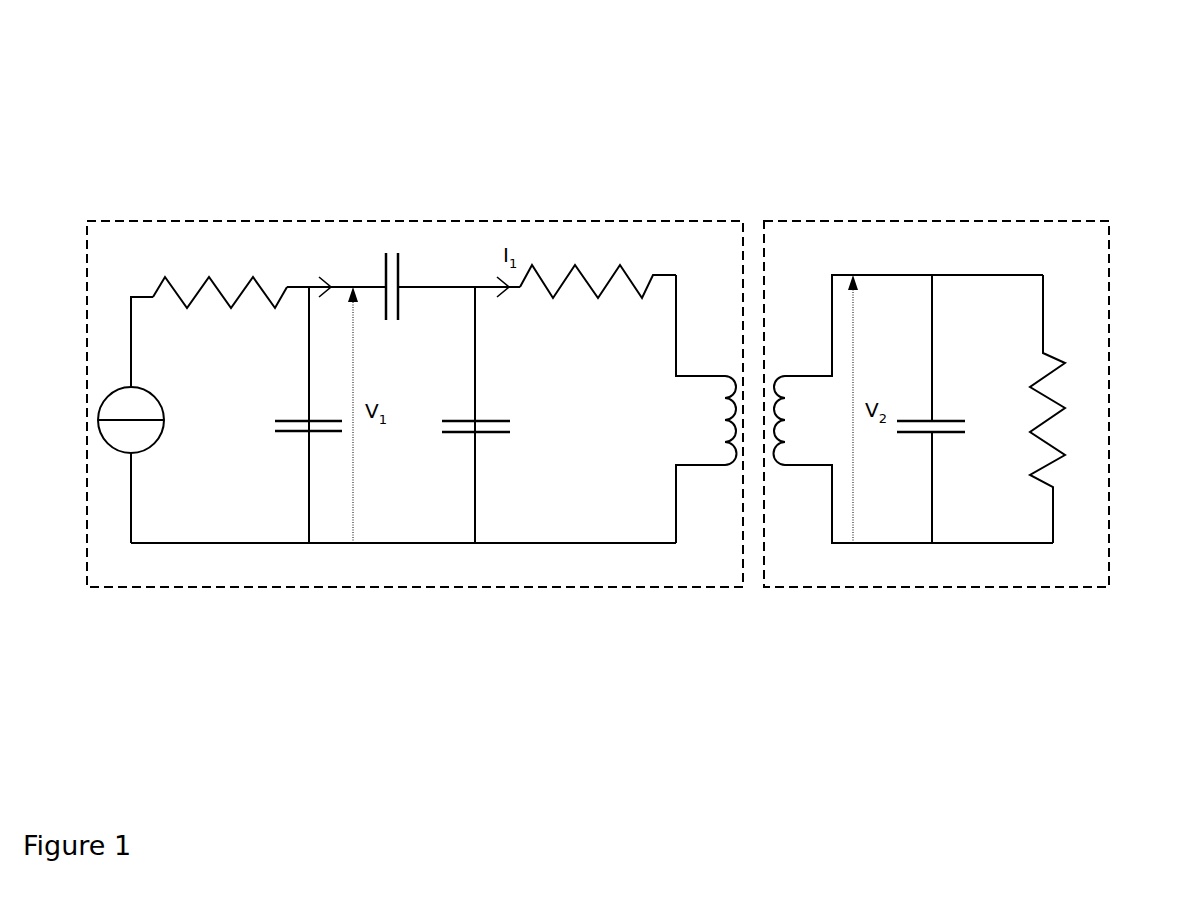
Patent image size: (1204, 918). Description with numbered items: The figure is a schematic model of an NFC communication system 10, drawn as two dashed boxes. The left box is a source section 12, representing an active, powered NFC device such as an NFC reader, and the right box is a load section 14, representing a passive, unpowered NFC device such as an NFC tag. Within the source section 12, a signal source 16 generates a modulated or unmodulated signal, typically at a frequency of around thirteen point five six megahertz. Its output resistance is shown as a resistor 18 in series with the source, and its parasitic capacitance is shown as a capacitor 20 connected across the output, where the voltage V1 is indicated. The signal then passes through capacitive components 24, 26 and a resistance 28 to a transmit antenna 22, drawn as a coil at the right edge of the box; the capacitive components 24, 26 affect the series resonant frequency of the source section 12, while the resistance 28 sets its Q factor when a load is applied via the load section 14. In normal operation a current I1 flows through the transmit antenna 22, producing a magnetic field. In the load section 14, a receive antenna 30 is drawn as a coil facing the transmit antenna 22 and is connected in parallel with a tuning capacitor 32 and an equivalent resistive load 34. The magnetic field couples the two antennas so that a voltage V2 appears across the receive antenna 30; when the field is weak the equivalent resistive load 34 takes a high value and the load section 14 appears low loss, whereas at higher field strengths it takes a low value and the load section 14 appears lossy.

The NFC system model 10 is at (193, 112).
The source section 12 is at (108, 587).
The load section 14 is at (822, 587).
The signal source 16 is at (132, 442).
The resistor 18 is at (219, 308).
The capacitor 20 is at (275, 433).
The transmit antenna 22 is at (708, 467).
The capacitive component 24 is at (386, 320).
The capacitive component 26 is at (442, 433).
The resistance 28 is at (587, 298).
The receive antenna 30 is at (797, 467).
The tuning capacitor 32 is at (897, 433).
The equivalent resistive load 34 is at (1063, 363).